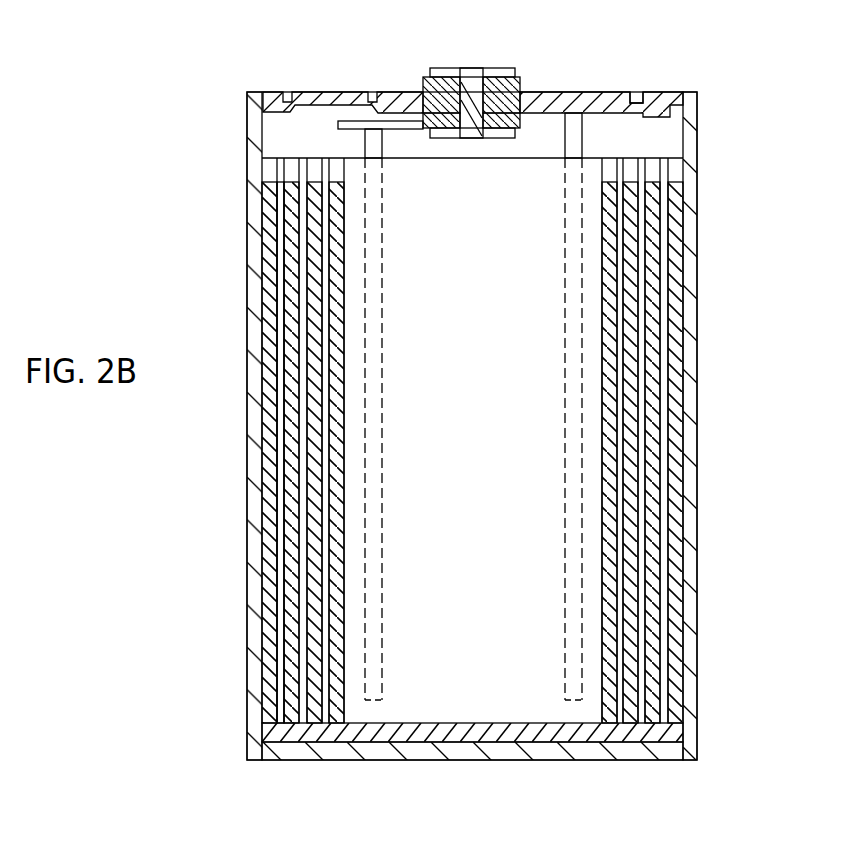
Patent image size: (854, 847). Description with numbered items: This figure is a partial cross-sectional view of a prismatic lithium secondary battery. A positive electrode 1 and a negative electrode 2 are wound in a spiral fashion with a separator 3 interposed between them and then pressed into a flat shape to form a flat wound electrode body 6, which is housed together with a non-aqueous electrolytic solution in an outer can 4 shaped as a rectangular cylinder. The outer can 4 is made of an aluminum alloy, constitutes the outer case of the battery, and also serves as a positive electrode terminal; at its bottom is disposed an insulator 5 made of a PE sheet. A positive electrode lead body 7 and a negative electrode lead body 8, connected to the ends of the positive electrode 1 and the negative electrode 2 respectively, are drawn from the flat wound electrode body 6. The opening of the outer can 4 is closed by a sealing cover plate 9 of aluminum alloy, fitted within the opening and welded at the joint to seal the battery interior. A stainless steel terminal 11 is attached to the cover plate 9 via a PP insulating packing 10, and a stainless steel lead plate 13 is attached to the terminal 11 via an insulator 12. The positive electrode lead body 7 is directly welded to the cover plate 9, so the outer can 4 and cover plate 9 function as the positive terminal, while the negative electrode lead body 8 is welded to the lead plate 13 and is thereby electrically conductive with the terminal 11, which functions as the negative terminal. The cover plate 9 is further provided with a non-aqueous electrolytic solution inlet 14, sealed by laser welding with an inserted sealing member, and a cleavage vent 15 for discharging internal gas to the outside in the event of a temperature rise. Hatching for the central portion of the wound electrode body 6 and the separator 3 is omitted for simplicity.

The positive electrode 1 is at (272, 377).
The negative electrode 2 is at (291, 463).
The separator 3 is at (281, 430).
The outer can 4 is at (696, 438).
The insulator 5 is at (465, 735).
The flat wound electrode body 6 is at (441, 440).
The positive electrode lead body 7 is at (575, 138).
The negative electrode lead body 8 is at (374, 143).
The sealing cover plate 9 is at (607, 97).
The insulating packing 10 is at (521, 84).
The terminal 11 is at (472, 76).
The insulator 12 is at (418, 110).
The lead plate 13 is at (396, 124).
The non-aqueous electrolytic solution inlet 14 is at (657, 100).
The cleavage vent 15 is at (337, 98).